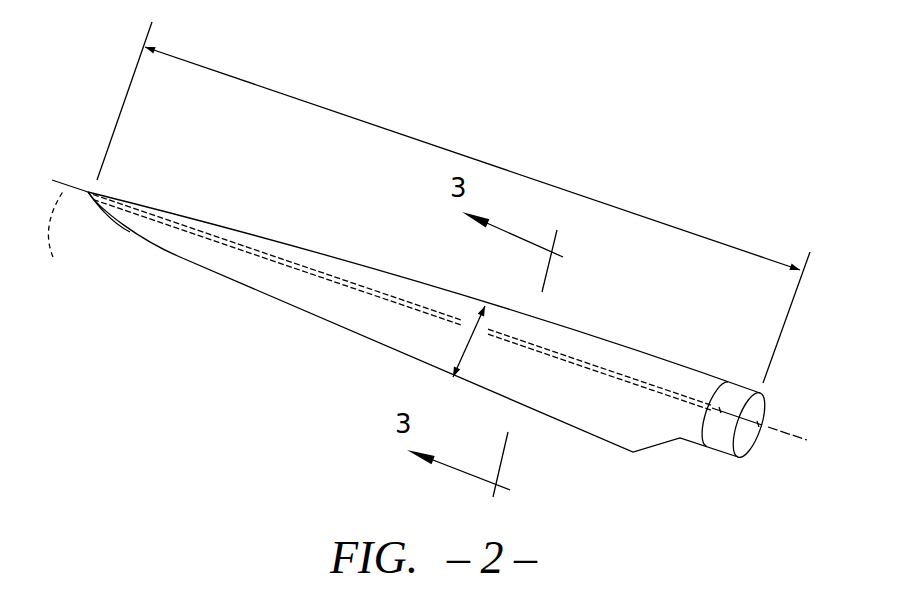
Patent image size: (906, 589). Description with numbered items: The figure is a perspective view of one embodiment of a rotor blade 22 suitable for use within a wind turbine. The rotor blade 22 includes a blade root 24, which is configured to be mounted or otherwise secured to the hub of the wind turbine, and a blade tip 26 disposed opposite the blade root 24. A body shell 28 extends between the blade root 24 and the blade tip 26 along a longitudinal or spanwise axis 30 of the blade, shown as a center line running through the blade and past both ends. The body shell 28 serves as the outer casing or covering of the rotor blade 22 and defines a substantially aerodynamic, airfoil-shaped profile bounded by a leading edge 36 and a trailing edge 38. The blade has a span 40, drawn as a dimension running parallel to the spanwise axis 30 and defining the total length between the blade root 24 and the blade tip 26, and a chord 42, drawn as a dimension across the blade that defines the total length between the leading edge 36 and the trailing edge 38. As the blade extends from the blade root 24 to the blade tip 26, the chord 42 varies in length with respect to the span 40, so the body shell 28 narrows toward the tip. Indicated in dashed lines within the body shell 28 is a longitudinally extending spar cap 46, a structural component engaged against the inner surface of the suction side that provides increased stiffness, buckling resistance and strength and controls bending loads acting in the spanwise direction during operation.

The rotor blade 22 is at (646, 152).
The blade root 24 is at (722, 437).
The blade tip 26 is at (88, 192).
The body shell 28 is at (255, 272).
The spanwise axis 30 is at (69, 241).
The leading edge 36 is at (583, 337).
The trailing edge 38 is at (578, 432).
The span 40 is at (402, 132).
The chord 42 is at (467, 342).
The spar cap 46 is at (314, 285).